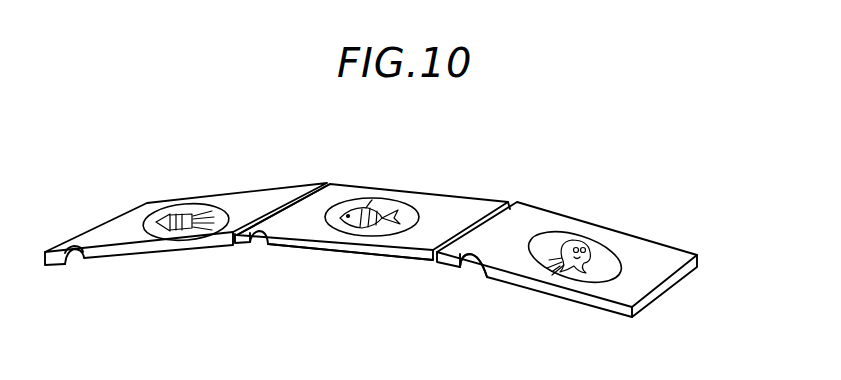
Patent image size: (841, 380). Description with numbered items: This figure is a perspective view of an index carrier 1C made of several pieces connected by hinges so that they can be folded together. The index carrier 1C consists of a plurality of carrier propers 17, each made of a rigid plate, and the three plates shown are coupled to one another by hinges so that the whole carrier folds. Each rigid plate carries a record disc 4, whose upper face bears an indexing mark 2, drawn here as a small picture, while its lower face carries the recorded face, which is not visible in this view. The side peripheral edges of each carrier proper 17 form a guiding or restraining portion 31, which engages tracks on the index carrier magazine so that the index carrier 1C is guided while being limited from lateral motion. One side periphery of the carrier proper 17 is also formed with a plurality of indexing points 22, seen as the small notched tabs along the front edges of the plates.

The indexing mark 2 is at (367, 203).
The guiding or restraining portion 31 is at (428, 193).
The carrier proper 17 is at (560, 220).
The record disc 4 is at (623, 267).
The indexing points 22 is at (477, 268).
The index carrier 1C is at (371, 258).